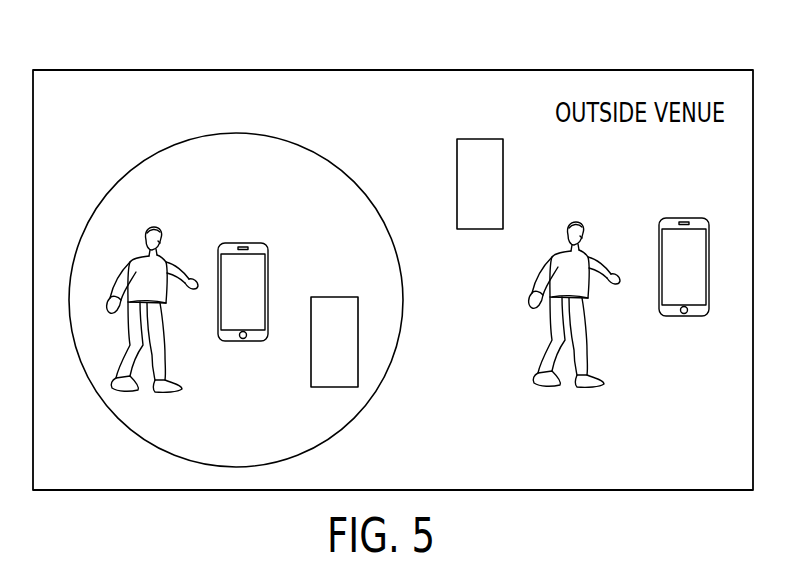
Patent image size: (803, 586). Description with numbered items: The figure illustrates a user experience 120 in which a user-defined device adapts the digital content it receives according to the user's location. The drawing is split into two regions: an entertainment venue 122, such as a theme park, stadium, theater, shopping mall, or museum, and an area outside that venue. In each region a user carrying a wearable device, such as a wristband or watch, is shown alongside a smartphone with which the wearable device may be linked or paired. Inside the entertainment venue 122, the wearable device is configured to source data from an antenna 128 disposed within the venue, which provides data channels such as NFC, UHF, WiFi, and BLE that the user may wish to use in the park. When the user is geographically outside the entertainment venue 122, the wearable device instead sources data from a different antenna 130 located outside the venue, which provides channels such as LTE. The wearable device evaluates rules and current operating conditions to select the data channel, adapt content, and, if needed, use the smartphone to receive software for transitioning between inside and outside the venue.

The user experience 120 is at (575, 52).
The entertainment venue 122 is at (237, 133).
The antenna 128 is at (331, 297).
The antenna 130 is at (478, 230).